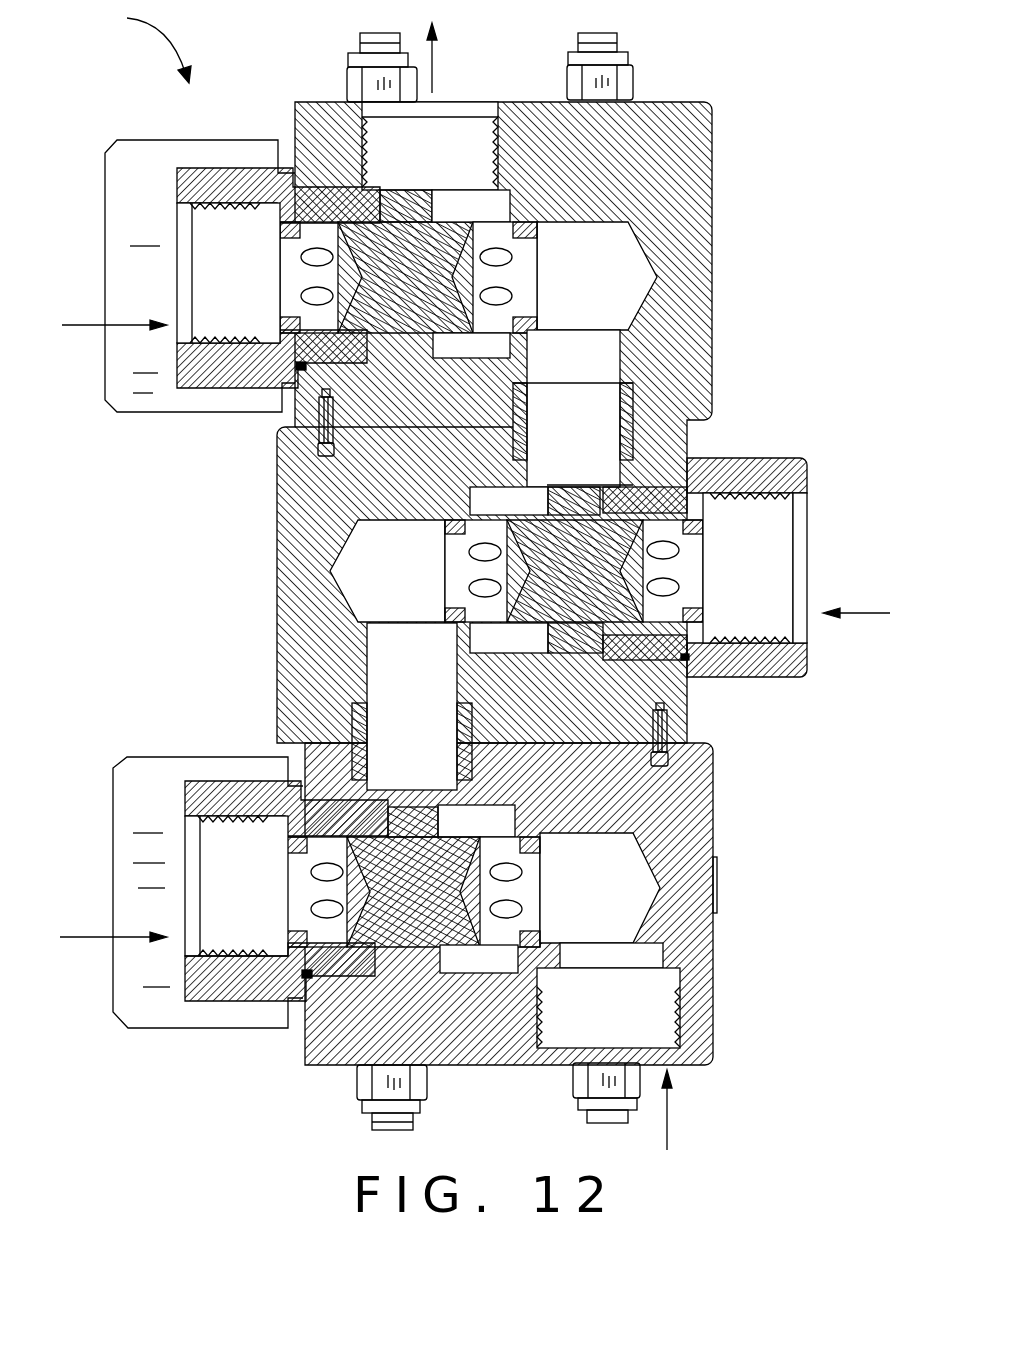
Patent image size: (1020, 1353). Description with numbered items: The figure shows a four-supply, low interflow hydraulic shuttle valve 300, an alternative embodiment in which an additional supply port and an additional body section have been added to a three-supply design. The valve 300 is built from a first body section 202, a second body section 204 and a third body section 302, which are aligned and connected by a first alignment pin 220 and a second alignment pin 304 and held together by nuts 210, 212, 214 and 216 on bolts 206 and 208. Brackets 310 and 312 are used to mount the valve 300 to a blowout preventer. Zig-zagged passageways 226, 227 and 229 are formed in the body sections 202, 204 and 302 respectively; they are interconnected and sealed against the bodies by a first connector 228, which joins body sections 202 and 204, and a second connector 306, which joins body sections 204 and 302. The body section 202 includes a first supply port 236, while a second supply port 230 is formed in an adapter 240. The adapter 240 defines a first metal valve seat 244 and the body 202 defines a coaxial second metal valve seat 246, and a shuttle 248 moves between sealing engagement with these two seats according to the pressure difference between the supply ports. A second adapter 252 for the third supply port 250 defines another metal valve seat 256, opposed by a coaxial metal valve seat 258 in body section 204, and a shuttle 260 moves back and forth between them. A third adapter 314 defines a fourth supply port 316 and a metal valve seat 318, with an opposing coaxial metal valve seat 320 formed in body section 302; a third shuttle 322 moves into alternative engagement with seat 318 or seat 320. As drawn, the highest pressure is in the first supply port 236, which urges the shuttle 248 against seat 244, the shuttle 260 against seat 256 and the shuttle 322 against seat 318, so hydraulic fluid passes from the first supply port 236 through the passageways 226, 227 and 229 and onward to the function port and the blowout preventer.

The low interflow hydraulic shuttle valve 300 is at (128, 49).
The third body section 302 is at (680, 148).
The second alignment pin 304 is at (320, 428).
The second connector 306 is at (640, 390).
The bracket 310 is at (155, 788).
The bracket 312 is at (137, 155).
The third adapter 314 is at (195, 184).
The fourth supply port 316 is at (207, 227).
The metal valve seat 318 is at (296, 368).
The metal valve seat 320 is at (515, 192).
The third shuttle 322 is at (480, 133).
The first body section 202 is at (680, 823).
The second body section 204 is at (308, 490).
The bolt 206 is at (378, 33).
The bolt 208 is at (598, 33).
The nut 210 is at (350, 82).
The nut 212 is at (630, 72).
The nut 214 is at (368, 1080).
The nut 216 is at (573, 1080).
The first alignment pin 220 is at (670, 737).
The zig-zagged passageway 226 is at (393, 793).
The zig-zagged passageway 227 is at (572, 463).
The first connector 228 is at (385, 708).
The zig-zagged passageway 229 is at (595, 277).
The second supply port 230 is at (213, 843).
The first supply port 236 is at (662, 1013).
The adapter 240 is at (213, 982).
The first metal valve seat 244 is at (303, 975).
The second metal valve seat 246 is at (507, 958).
The shuttle 248 is at (293, 998).
The third supply port 250 is at (765, 500).
The second adapter 252 is at (785, 462).
The metal valve seat 256 is at (723, 665).
The metal valve seat 258 is at (470, 627).
The shuttle 260 is at (673, 575).